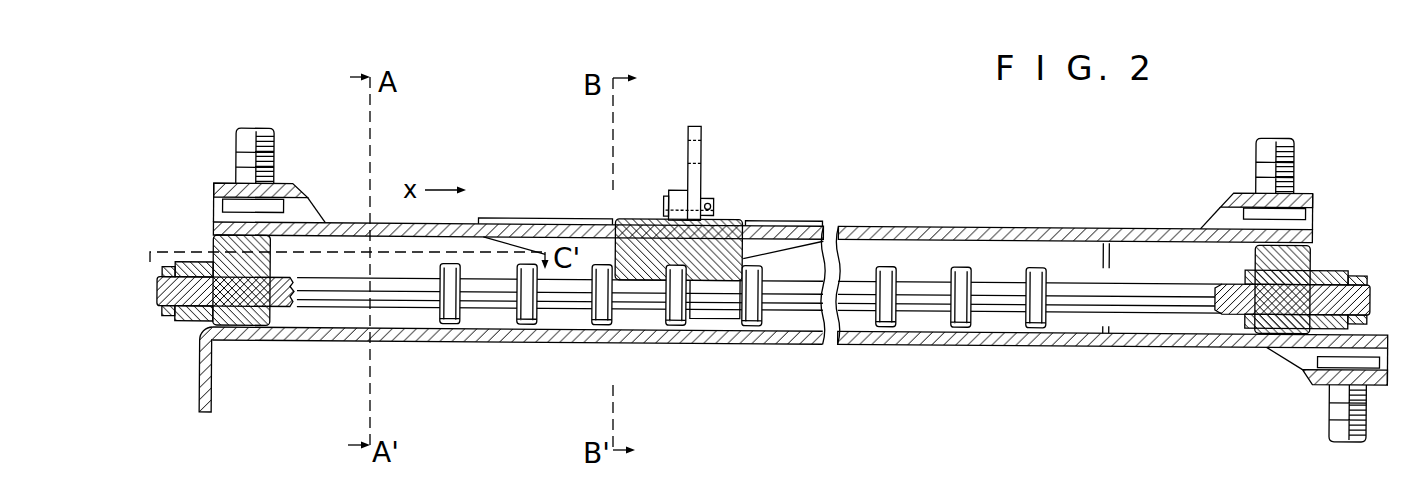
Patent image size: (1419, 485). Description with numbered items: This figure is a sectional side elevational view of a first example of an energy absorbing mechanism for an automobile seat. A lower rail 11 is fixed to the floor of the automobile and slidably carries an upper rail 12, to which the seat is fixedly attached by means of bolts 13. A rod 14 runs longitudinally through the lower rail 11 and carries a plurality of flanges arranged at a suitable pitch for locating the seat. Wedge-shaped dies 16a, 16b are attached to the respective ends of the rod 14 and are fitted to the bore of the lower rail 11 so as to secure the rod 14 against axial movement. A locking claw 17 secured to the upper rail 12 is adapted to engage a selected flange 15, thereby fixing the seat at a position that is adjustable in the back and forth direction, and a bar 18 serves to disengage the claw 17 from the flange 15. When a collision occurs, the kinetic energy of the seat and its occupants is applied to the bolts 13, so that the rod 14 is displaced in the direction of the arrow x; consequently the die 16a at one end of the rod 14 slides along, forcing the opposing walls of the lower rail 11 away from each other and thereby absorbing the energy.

The lower rail 11 is at (910, 342).
The upper rail 12 is at (937, 229).
The bolts 13 is at (251, 129).
The rod 14 is at (567, 300).
The flange 15 is at (752, 325).
The wedge-shaped die 16a is at (246, 326).
The wedge-shaped die 16b is at (1268, 347).
The locking claw 17 is at (723, 217).
The bar 18 is at (697, 180).